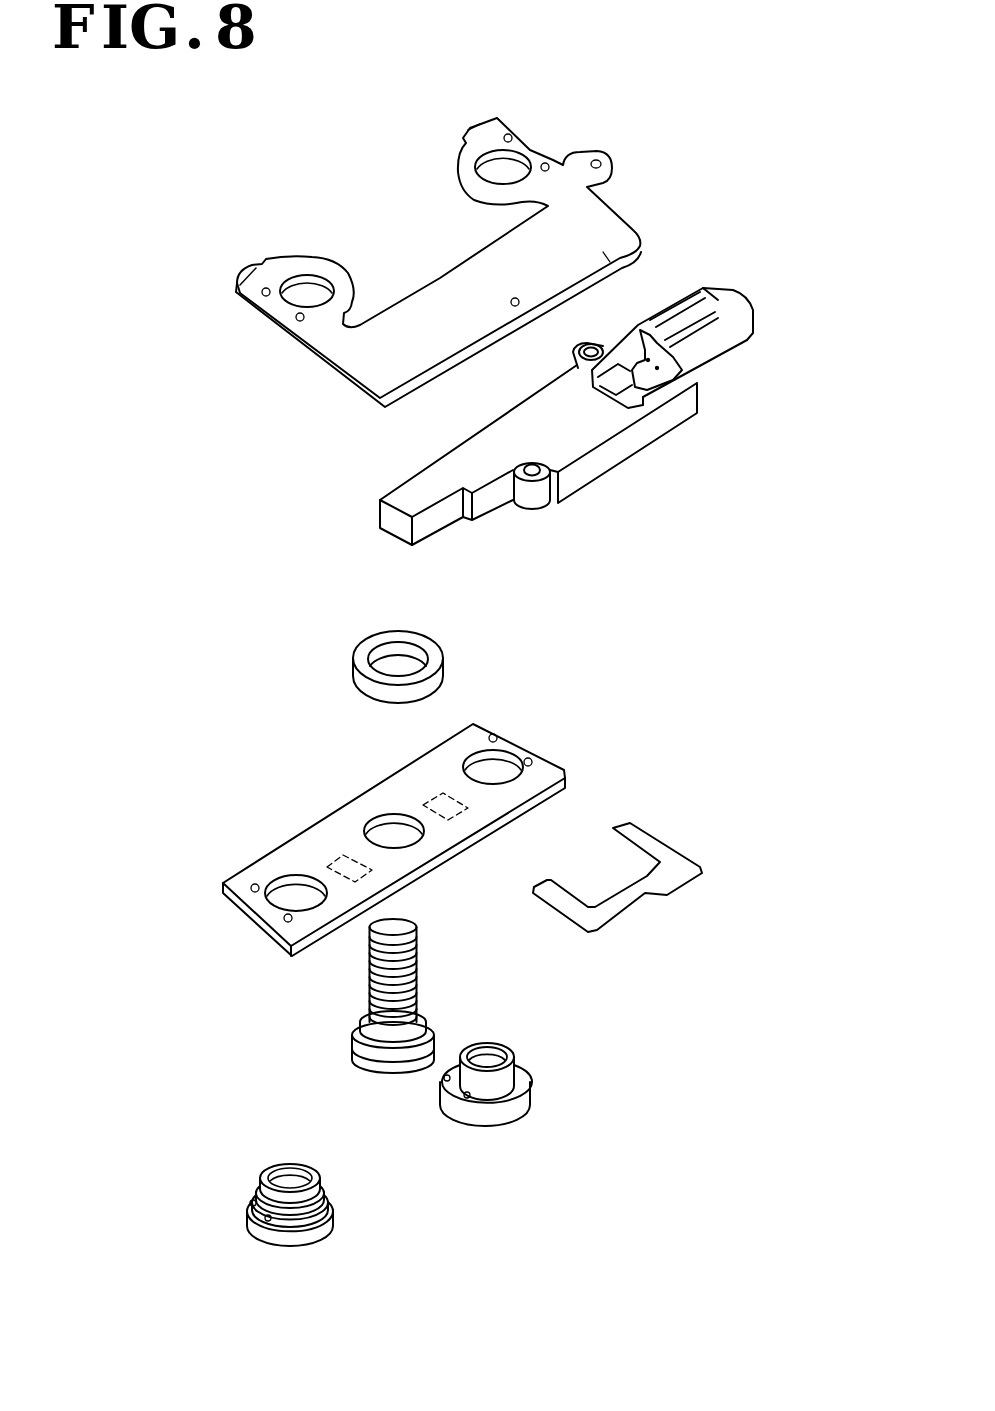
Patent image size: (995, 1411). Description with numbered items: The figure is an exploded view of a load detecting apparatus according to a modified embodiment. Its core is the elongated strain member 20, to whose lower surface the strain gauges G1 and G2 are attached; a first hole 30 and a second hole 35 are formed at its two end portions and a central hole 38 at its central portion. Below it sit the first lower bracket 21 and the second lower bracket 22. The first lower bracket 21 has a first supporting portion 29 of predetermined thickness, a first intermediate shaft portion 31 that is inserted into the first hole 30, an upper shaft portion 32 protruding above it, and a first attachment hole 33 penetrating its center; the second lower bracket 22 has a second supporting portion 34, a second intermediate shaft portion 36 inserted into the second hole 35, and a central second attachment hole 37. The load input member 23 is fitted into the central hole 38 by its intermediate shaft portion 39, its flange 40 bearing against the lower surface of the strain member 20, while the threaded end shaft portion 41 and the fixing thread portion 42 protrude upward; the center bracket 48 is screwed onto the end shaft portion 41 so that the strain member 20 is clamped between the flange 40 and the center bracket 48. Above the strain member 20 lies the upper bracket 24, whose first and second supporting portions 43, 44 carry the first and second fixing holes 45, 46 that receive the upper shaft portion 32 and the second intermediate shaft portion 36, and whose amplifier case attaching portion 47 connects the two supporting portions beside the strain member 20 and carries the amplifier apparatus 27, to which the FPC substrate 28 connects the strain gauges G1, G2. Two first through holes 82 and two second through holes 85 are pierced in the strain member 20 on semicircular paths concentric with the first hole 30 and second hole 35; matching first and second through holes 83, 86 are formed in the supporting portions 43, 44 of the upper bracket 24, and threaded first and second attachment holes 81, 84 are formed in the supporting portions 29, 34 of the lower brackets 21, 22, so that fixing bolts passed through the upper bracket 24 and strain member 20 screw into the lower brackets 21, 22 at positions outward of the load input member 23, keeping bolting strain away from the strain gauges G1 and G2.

The strain member 20 is at (382, 789).
The first lower bracket 21 is at (266, 1208).
The second lower bracket 22 is at (490, 1091).
The load input member 23 is at (353, 1026).
The upper bracket 24 is at (425, 219).
The amplifier apparatus 27 is at (678, 410).
The FPC substrate 28 is at (667, 850).
The first supporting portion 29 is at (273, 1203).
The first hole 30 is at (292, 890).
The first intermediate shaft portion 31 is at (312, 1223).
The upper shaft portion 32 is at (277, 1205).
The first attachment hole 33 is at (283, 1177).
The second supporting portion 34 is at (485, 1122).
The second hole 35 is at (500, 767).
The second intermediate shaft portion 36 is at (508, 1077).
The second attachment hole 37 is at (487, 1050).
The central hole 38 is at (406, 840).
The intermediate shaft portion 39 is at (375, 1047).
The flange 40 is at (397, 1065).
The end shaft portion 41 is at (365, 1020).
The fixing thread portion 42 is at (377, 971).
The first supporting portion 43 is at (262, 283).
The second supporting portion 44 is at (493, 130).
The first fixing hole 45 is at (301, 290).
The second fixing hole 46 is at (512, 165).
The amplifier case attaching portion 47 is at (607, 257).
The center bracket 48 is at (370, 643).
The first attachment holes 81 is at (249, 1201).
The first through holes 82 is at (253, 888).
The first through holes 83 is at (262, 292).
The second attachment holes 84 is at (445, 1081).
The second through holes 85 is at (493, 735).
The second through holes 86 is at (517, 136).
The strain gauge G1 is at (340, 860).
The strain gauge G2 is at (432, 800).